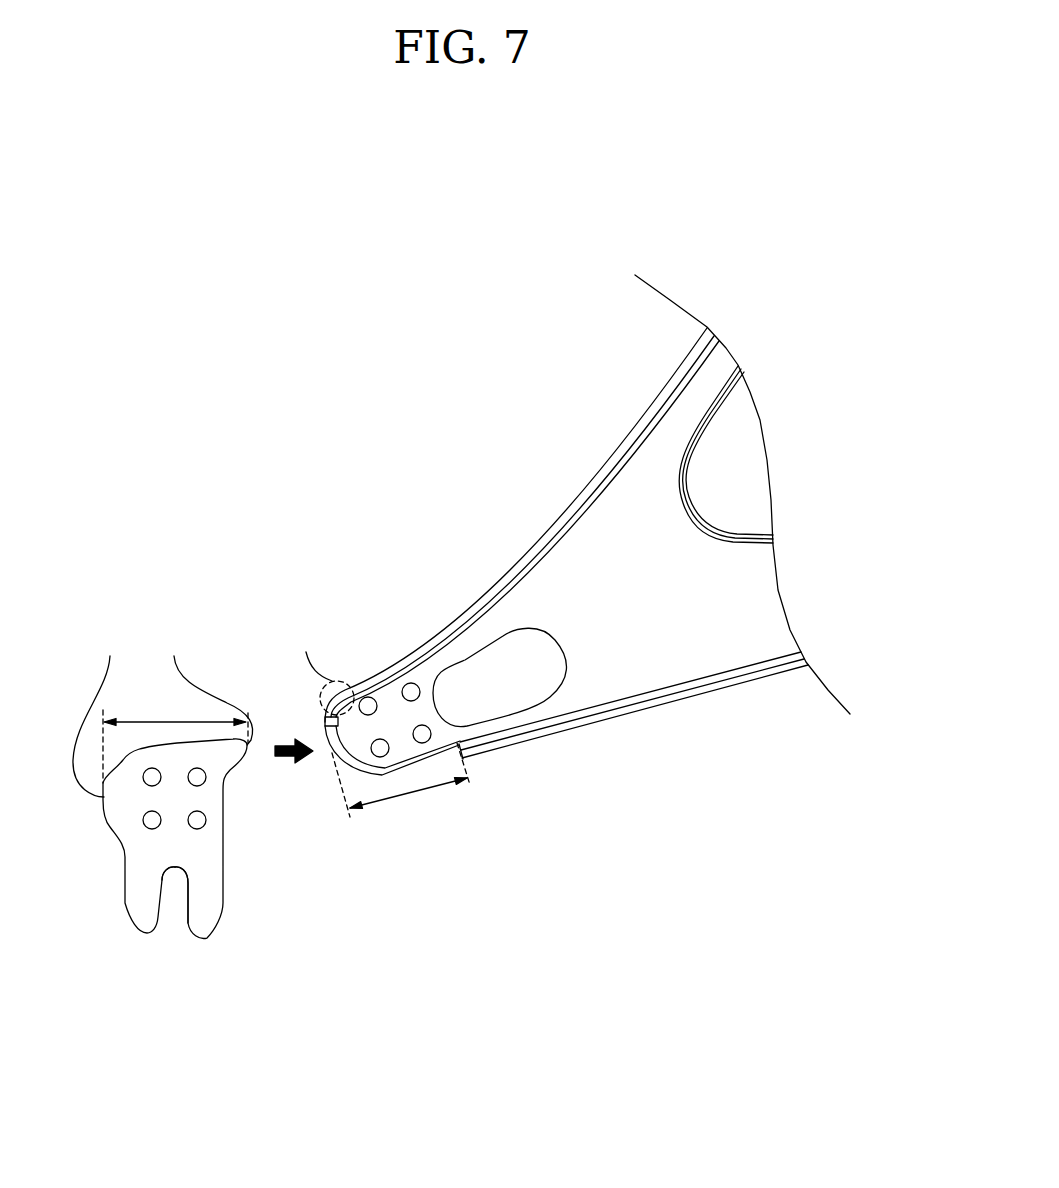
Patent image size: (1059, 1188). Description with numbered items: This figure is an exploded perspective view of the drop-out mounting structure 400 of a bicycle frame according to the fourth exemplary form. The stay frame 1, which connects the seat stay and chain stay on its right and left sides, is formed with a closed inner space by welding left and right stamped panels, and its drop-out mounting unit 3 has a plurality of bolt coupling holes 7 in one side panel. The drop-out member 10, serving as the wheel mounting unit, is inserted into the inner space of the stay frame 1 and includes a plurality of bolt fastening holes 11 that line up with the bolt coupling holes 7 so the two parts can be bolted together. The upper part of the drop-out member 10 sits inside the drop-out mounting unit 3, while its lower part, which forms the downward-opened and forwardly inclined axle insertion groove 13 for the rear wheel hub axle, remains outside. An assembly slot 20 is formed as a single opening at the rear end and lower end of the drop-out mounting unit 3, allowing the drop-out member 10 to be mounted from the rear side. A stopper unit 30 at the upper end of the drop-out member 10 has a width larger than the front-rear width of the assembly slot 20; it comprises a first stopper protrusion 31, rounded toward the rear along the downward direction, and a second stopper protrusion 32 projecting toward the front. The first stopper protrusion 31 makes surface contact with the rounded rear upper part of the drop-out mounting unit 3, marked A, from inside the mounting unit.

The stay frame 1 is at (612, 397).
The drop-out mounting unit 3 is at (302, 705).
The bolt coupling holes 7 is at (415, 684).
The drop-out member 10 is at (242, 849).
The bolt fastening holes 11 is at (153, 830).
The axle insertion groove 13 is at (160, 903).
The assembly slot 20 is at (386, 788).
The stopper unit 30 is at (186, 632).
The first stopper protrusion 31 is at (98, 714).
The second stopper protrusion 32 is at (205, 688).
The drop-out mounting structure 400 is at (408, 256).